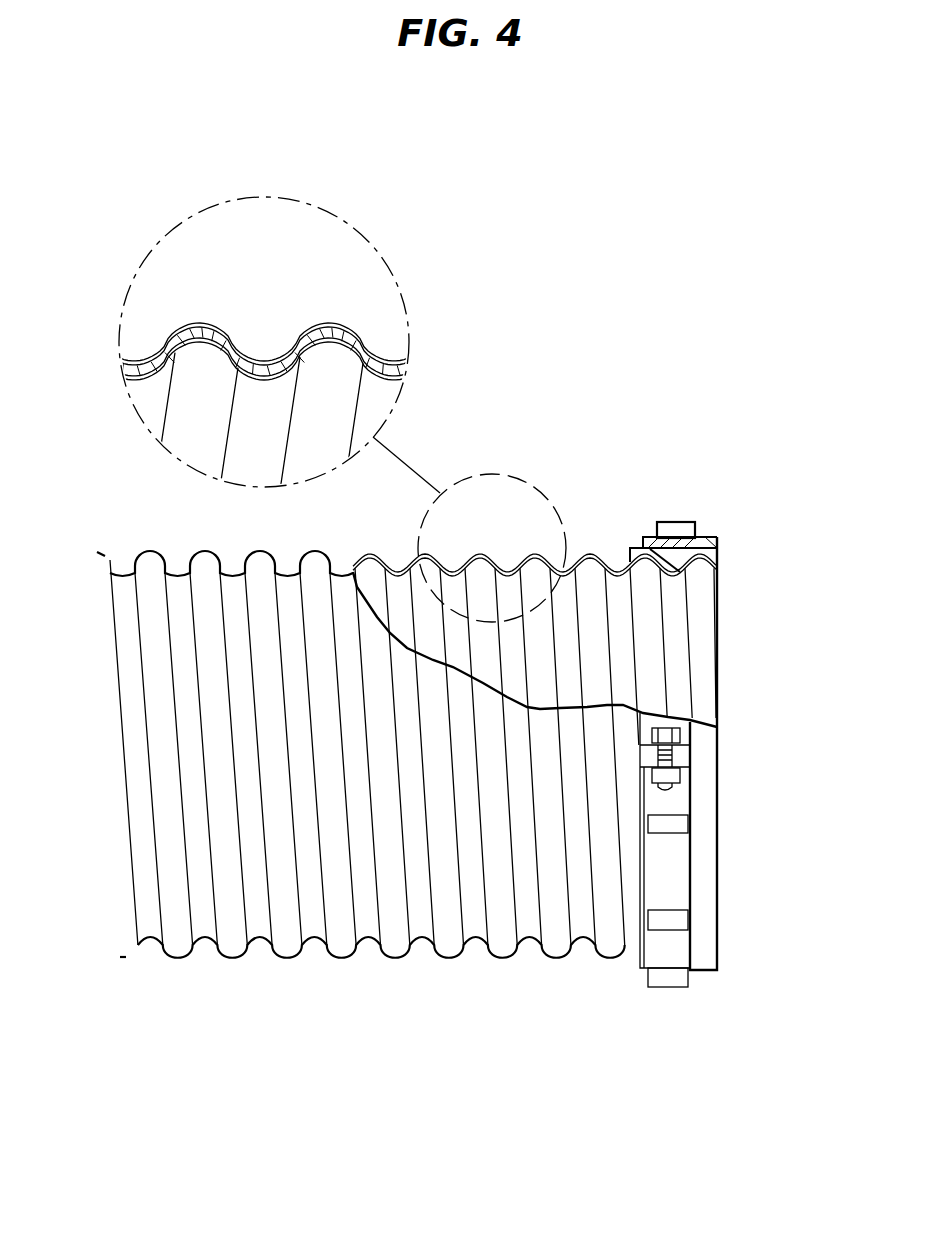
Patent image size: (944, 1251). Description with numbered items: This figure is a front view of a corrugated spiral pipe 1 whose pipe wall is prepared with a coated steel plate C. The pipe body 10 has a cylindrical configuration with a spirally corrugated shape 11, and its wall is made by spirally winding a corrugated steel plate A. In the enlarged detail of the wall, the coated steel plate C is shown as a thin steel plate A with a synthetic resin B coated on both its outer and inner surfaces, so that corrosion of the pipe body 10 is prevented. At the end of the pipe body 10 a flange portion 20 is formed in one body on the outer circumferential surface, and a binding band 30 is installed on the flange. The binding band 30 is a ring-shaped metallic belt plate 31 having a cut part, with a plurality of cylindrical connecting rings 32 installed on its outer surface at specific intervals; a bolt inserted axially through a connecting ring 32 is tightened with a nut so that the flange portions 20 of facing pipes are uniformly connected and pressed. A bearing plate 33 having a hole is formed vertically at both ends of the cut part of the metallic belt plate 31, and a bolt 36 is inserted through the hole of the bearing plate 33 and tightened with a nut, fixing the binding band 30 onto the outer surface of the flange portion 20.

The spiral pipe 1 is at (644, 443).
The pipe body 10 is at (288, 972).
The spirally corrugated shape 11 is at (388, 962).
The flange portion 20 is at (731, 820).
The binding band 30 is at (686, 888).
The metallic belt plate 31 is at (650, 952).
The connecting ring 32 is at (668, 988).
The bearing plate 33 is at (683, 778).
The bolt 36 is at (665, 718).
The steel plate A is at (264, 344).
The synthetic resin B is at (145, 360).
The coated steel plate C is at (113, 186).